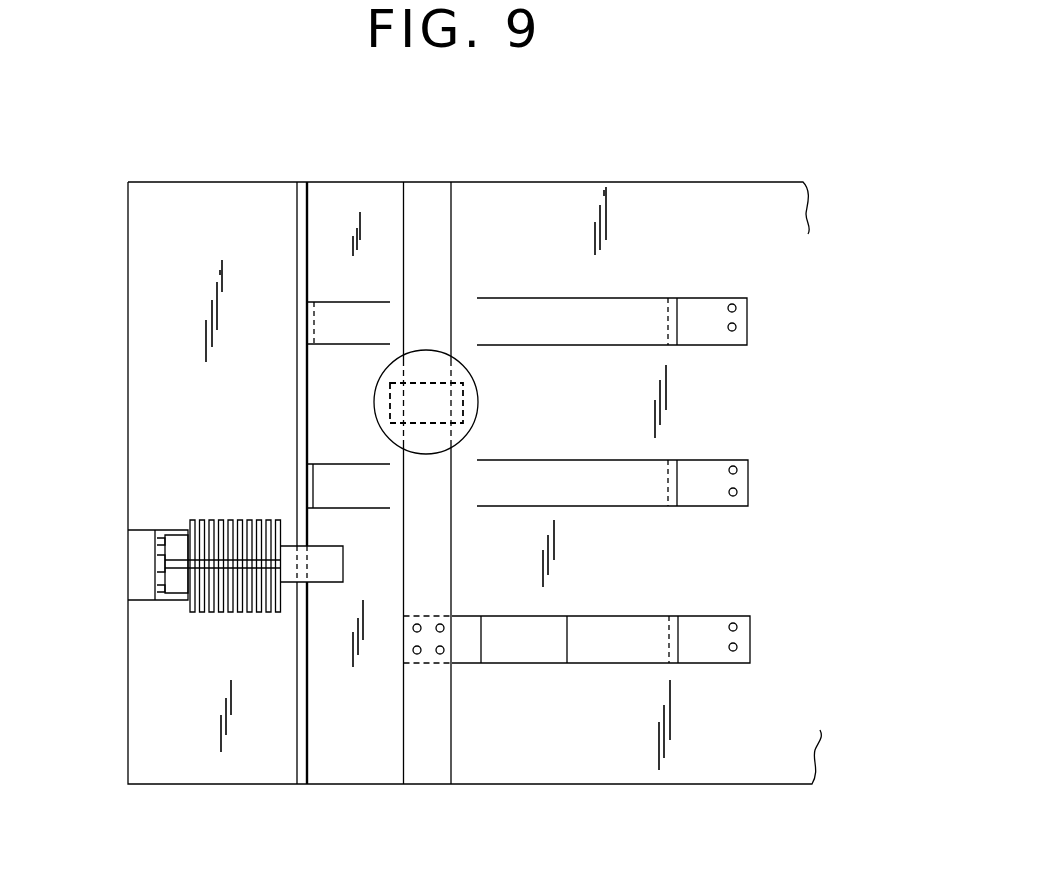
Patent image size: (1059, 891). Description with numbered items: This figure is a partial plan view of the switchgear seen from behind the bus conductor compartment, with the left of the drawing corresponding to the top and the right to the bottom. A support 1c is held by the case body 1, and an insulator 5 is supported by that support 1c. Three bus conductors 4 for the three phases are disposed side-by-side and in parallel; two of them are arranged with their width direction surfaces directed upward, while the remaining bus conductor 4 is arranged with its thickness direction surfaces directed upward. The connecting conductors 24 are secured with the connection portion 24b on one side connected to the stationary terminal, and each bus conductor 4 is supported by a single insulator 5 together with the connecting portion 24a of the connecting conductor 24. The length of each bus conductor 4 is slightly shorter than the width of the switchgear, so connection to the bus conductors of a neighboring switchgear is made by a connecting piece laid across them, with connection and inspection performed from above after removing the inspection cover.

The case body 1 is at (207, 182).
The support 1c is at (146, 530).
The bus conductor 4 is at (297, 755).
The insulator 5 is at (375, 406).
The connecting conductor 24 is at (547, 298).
The connecting portion 24a is at (311, 302).
The connection portion 24b is at (731, 298).